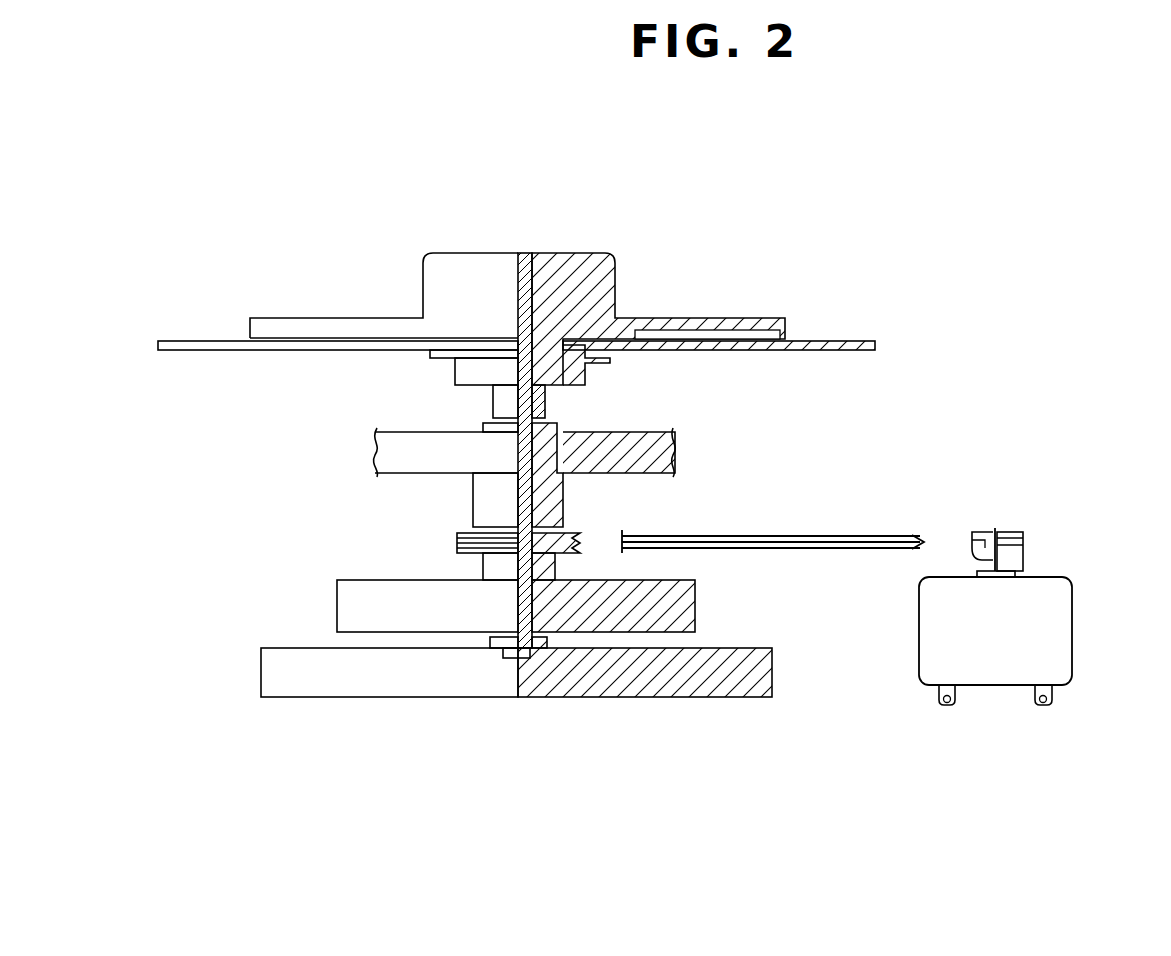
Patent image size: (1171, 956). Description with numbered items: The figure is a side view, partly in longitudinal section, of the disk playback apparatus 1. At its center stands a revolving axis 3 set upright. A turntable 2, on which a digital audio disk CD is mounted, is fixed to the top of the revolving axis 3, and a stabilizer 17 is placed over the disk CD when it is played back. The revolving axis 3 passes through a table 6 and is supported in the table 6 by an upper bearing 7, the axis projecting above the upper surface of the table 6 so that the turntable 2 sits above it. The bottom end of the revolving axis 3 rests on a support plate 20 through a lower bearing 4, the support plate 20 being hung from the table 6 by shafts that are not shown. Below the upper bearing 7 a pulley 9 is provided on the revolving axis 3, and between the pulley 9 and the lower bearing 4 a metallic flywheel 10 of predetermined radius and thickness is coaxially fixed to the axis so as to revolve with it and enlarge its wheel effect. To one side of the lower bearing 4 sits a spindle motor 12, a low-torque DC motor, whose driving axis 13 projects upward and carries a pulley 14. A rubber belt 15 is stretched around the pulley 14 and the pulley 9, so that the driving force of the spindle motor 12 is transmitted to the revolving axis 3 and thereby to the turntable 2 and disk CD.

The disk playback apparatus 1 is at (805, 237).
The turntable 2 is at (455, 373).
The revolving axis 3 is at (563, 428).
The lower bearing 4 is at (490, 641).
The table 6 is at (410, 425).
The upper bearing 7 is at (473, 492).
The pulley 9 is at (458, 537).
The flywheel 10 is at (340, 597).
The spindle motor 12 is at (1072, 632).
The driving axis 13 is at (995, 530).
The pulley 14 is at (1022, 552).
The rubber belt 15 is at (800, 537).
The stabilizer 17 is at (440, 287).
The support plate 20 is at (670, 699).
The digital audio disk CD is at (170, 341).